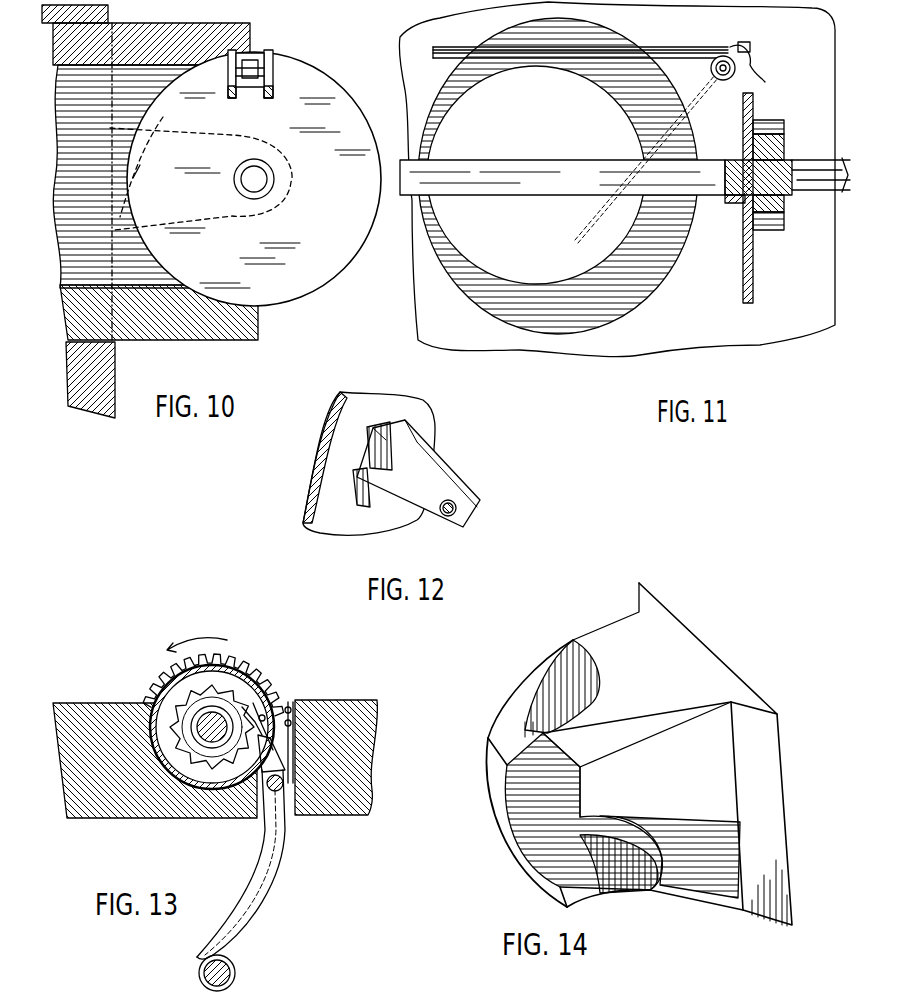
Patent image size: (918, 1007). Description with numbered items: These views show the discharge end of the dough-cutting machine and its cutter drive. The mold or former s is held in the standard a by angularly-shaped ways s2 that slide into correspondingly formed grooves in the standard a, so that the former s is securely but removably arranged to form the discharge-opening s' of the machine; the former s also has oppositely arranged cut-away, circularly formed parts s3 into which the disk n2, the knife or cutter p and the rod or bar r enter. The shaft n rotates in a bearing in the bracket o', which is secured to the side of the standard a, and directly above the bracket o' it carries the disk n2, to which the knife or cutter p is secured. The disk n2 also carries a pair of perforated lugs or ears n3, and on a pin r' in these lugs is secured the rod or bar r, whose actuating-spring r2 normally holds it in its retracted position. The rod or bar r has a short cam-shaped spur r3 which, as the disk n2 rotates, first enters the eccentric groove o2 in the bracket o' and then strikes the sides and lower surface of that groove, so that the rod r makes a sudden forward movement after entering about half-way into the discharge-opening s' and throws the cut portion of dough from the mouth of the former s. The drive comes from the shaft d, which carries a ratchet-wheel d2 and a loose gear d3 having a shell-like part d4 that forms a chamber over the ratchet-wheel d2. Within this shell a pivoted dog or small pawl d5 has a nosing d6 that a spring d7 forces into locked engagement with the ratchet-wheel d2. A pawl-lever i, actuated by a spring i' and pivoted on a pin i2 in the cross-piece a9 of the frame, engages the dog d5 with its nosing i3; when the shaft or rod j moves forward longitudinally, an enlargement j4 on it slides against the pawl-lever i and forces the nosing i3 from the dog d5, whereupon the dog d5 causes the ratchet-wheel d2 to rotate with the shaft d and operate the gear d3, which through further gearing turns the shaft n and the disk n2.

In FIG. 10, the standard a is at (115, 372).
In FIG. 11, the standard a is at (617, 179).
In FIG. 12, the standard a is at (368, 413).
In FIG. 13, the cross-piece a9 is at (374, 727).
In FIG. 10, the former or mold s is at (159, 330).
In FIG. 11, the former or mold s is at (558, 184).
In FIG. 14, the former or mold s is at (667, 754).
In FIG. 10, the discharge-opening s' is at (126, 181).
In FIG. 11, the discharge-opening s' is at (536, 175).
In FIG. 14, the discharge-opening s' is at (557, 773).
In FIG. 14, the angularly-shaped ways s2 is at (643, 585).
In FIG. 10, the cut-away circularly-formed parts s3 is at (227, 305).
In FIG. 11, the cut-away circularly-formed parts s3 is at (630, 97).
In FIG. 14, the cut-away circularly-formed parts s3 is at (567, 663).
In FIG. 10, the shaft n is at (254, 179).
In FIG. 11, the shaft n is at (812, 195).
In FIG. 10, the disk n2 is at (254, 179).
In FIG. 11, the disk n2 is at (743, 125).
In FIG. 10, the perforated lugs or ears n3 is at (228, 68).
In FIG. 11, the perforated lugs or ears n3 is at (744, 42).
In FIG. 10, the bracket o' is at (201, 181).
In FIG. 11, the bracket o' is at (770, 177).
In FIG. 12, the bracket o' is at (416, 473).
In FIG. 10, the eccentric groove o2 is at (162, 135).
In FIG. 11, the eccentric groove o2 is at (765, 120).
In FIG. 12, the eccentric groove o2 is at (367, 467).
In FIG. 10, the knife or cutter p is at (143, 167).
In FIG. 11, the knife or cutter p is at (502, 196).
In FIG. 10, the rod or bar r is at (253, 56).
In FIG. 11, the rod or bar r is at (580, 133).
In FIG. 10, the pin r' is at (287, 77).
In FIG. 11, the pin r' is at (718, 82).
In FIG. 10, the actuating-spring r2 is at (250, 88).
In FIG. 11, the actuating-spring r2 is at (597, 196).
In FIG. 11, the cam-shaped spur r3 is at (752, 82).
In FIG. 13, the shaft d is at (214, 724).
In FIG. 13, the ratchet-wheel d2 is at (217, 767).
In FIG. 13, the loose gear d3 is at (253, 693).
In FIG. 13, the shell-like part d4 is at (160, 697).
In FIG. 13, the dog or small pawl d5 is at (273, 703).
In FIG. 13, the nosing d6 is at (260, 703).
In FIG. 13, the spring d7 is at (242, 707).
In FIG. 13, the pawl-lever i is at (241, 864).
In FIG. 13, the spring i' is at (315, 726).
In FIG. 13, the pin i2 is at (273, 790).
In FIG. 13, the nosing i3 is at (267, 797).
In FIG. 13, the shaft or rod j is at (227, 963).
In FIG. 13, the enlargement or projection j4 is at (203, 968).